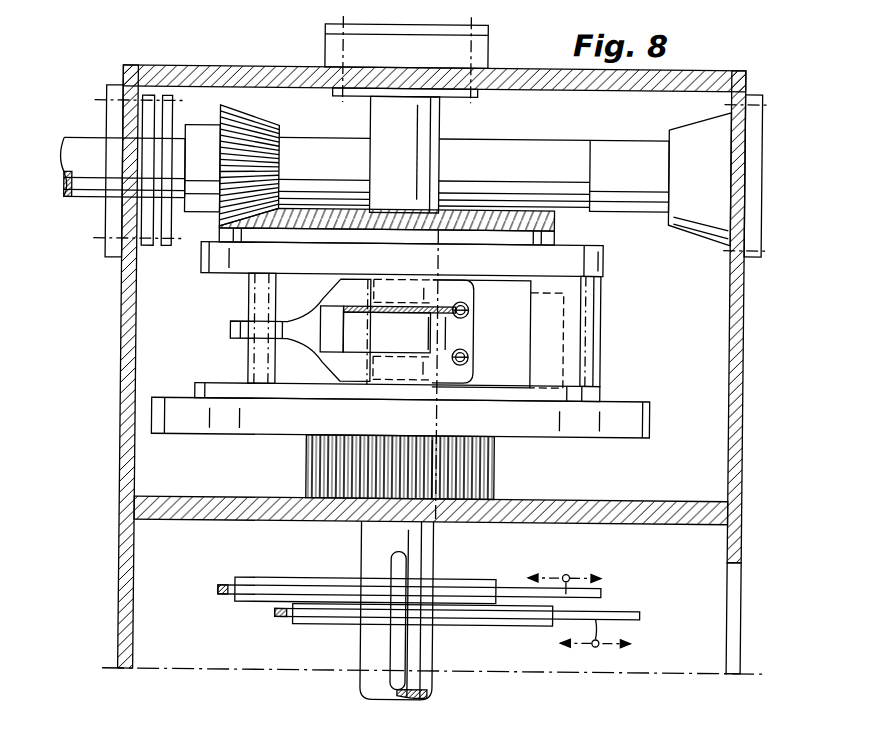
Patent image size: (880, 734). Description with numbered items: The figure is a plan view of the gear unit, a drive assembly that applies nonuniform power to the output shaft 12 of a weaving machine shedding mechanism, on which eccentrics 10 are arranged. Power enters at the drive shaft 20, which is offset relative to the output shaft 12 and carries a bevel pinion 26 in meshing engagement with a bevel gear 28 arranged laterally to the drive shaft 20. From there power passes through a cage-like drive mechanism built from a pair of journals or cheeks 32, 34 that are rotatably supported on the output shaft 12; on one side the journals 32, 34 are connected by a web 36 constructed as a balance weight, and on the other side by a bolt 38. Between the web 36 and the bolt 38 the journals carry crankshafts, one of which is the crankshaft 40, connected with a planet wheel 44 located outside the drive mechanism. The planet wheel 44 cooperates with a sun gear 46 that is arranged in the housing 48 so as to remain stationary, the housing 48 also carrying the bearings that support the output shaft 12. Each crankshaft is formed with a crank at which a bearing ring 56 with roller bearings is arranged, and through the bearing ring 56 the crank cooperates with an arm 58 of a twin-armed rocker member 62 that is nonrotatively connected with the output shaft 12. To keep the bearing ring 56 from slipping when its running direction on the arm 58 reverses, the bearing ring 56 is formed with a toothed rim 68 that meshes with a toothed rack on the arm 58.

The eccentrics 10 is at (505, 626).
The output shaft 12 is at (373, 648).
The drive shaft 20 is at (82, 186).
The bevel pinion 26 is at (262, 127).
The bevel gear 28 is at (565, 218).
The journal 32 is at (600, 266).
The journal 34 is at (604, 393).
The web 36 is at (592, 313).
The bolt 38 is at (258, 358).
The crankshaft 40 is at (388, 378).
The planet wheel 44 is at (433, 490).
The sun gear 46 is at (487, 470).
The housing 48 is at (120, 581).
The bearing ring 56 is at (445, 333).
The arm 58 is at (340, 328).
The rocker member 62 is at (230, 327).
The toothed rim 68 is at (398, 313).